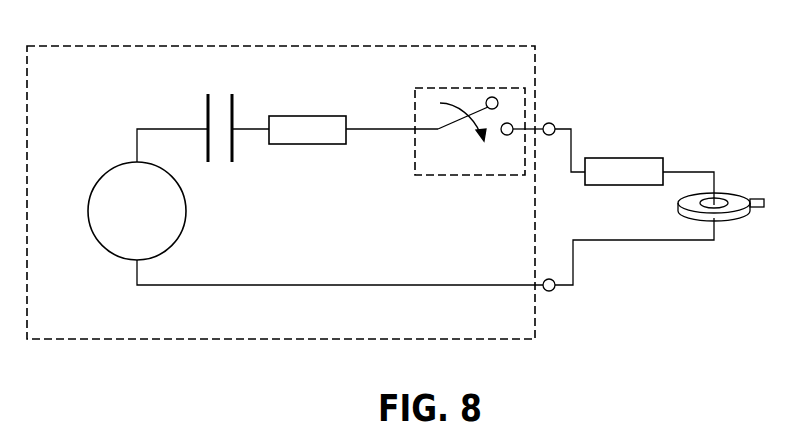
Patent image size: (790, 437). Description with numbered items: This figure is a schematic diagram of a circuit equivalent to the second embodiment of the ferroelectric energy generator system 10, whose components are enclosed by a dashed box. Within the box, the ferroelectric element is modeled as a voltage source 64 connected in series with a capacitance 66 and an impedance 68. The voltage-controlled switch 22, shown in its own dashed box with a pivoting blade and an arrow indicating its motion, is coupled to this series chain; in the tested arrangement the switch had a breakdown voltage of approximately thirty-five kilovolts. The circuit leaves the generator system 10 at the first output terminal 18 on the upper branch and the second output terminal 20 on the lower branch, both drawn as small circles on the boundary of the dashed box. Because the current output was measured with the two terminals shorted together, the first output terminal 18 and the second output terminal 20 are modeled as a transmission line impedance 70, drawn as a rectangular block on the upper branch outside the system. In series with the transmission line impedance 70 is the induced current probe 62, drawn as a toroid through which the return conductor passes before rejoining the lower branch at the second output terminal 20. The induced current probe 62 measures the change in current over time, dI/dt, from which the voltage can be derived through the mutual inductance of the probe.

The ferroelectric energy generator system 10 is at (169, 45).
The first output terminal 18 is at (556, 122).
The second output terminal 20 is at (555, 292).
The voltage-controlled switch 22 is at (428, 88).
The induced current probe 62 is at (730, 192).
The voltage source 64 is at (110, 166).
The capacitance 66 is at (205, 114).
The impedance 68 is at (298, 116).
The transmission line impedance 70 is at (608, 185).